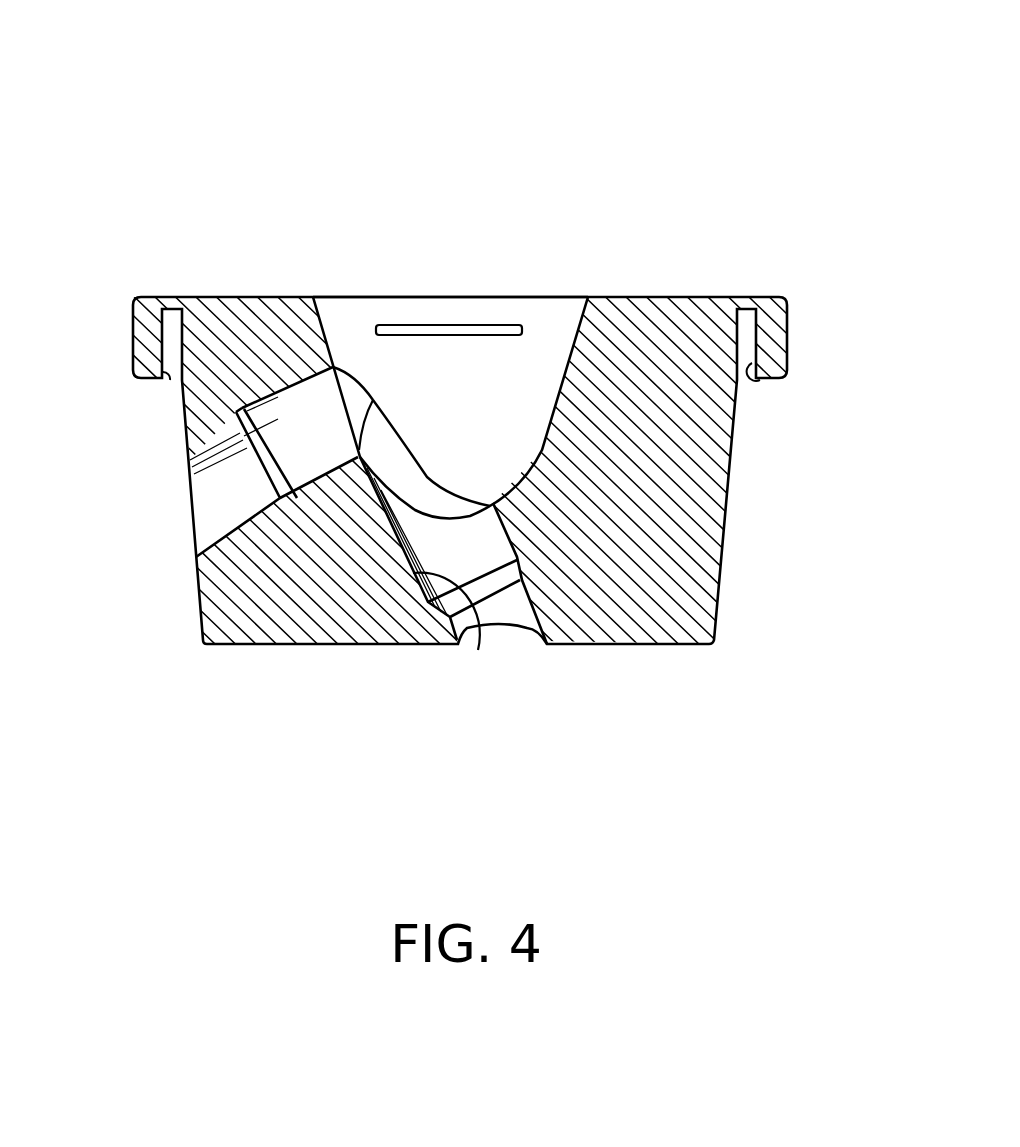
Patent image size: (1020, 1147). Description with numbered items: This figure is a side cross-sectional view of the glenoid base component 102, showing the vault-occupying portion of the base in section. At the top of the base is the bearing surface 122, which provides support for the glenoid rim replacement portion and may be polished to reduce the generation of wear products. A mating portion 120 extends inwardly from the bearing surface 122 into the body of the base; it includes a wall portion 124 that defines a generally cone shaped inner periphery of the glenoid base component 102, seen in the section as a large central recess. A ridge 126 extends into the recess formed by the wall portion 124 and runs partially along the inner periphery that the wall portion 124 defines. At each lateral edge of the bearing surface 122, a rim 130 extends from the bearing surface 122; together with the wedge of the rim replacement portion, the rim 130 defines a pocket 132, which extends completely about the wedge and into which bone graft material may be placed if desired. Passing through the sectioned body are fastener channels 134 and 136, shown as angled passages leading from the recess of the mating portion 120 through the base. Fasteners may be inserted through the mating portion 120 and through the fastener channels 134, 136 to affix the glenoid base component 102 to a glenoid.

The glenoid base component 102 is at (218, 140).
The mating portion 120 is at (467, 306).
The bearing surface 122 is at (723, 297).
The wall portion 124 is at (574, 343).
The ridge 126 is at (395, 324).
The rim 130 is at (133, 348).
The pocket 132 is at (170, 380).
The fastener channel 134 is at (227, 533).
The fastener channel 136 is at (478, 650).